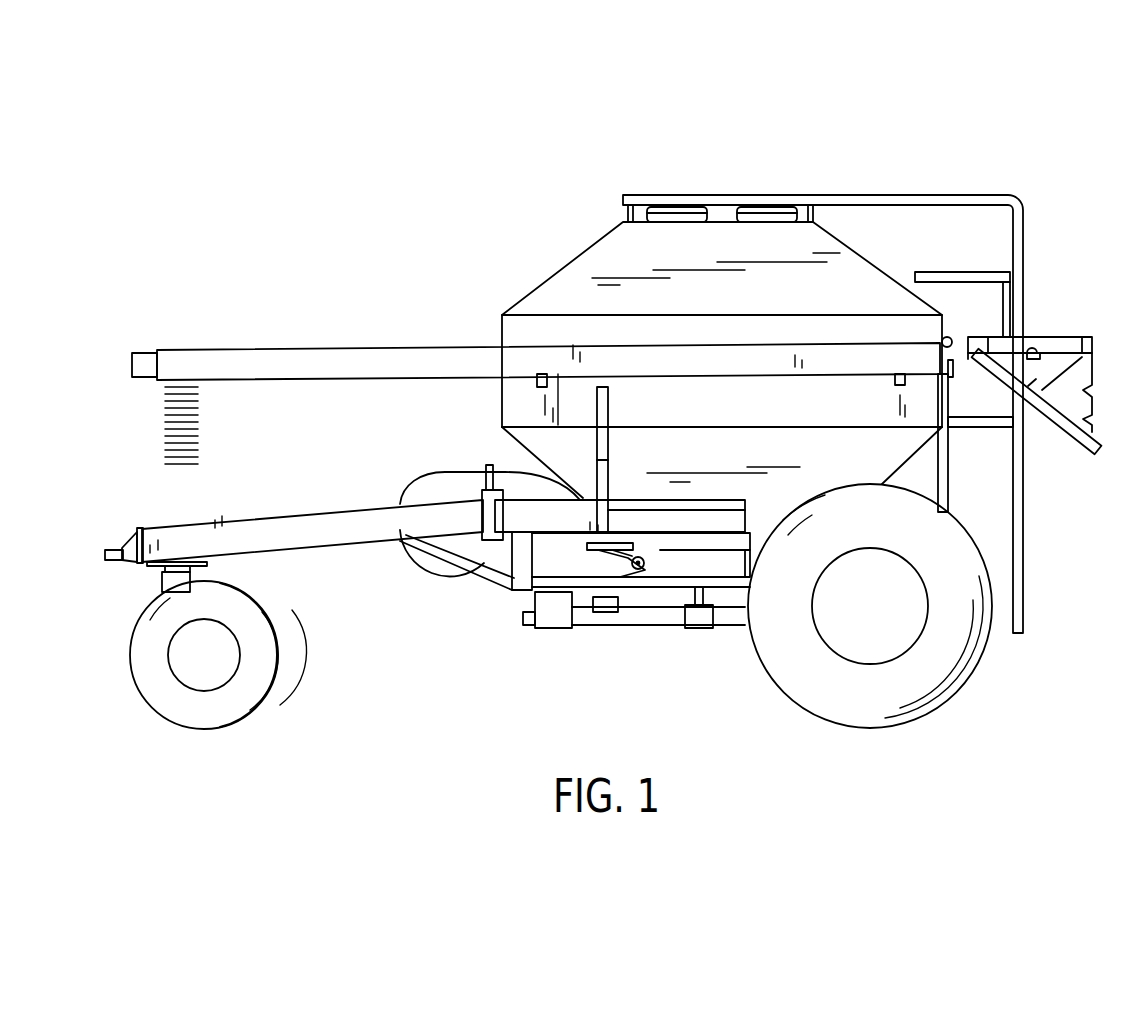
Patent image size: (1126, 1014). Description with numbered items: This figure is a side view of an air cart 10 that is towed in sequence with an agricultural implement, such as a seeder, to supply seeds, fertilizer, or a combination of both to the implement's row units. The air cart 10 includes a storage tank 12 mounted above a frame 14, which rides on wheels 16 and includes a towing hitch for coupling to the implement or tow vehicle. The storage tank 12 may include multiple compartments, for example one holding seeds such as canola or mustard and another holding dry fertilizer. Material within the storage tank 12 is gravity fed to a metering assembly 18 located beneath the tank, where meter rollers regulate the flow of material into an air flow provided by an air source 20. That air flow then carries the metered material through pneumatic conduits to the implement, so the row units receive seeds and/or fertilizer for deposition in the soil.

The air cart 10 is at (565, 156).
The storage tank 12 is at (603, 253).
The frame 14 is at (310, 514).
The wheels 16 is at (152, 707).
The metering assembly 18 is at (658, 572).
The air source 20 is at (420, 478).